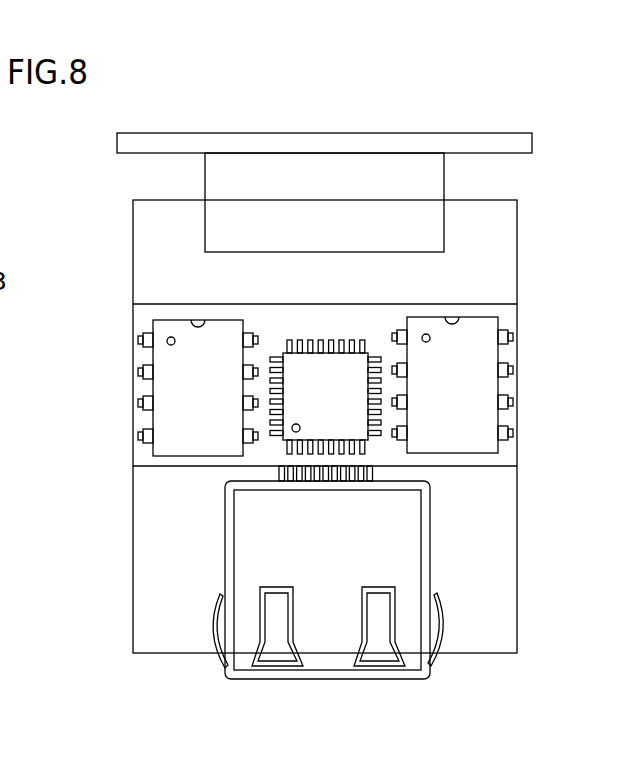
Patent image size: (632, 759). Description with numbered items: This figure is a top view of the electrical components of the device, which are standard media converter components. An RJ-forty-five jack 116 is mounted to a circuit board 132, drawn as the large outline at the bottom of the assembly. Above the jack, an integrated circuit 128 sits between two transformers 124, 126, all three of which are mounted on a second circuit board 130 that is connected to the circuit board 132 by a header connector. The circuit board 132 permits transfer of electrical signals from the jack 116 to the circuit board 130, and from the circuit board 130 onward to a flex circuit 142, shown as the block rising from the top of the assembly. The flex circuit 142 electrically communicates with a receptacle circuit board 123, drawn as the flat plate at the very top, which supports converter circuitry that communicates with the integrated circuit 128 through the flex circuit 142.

The RJ-45 jack 116 is at (323, 637).
The receptacle circuit board 123 is at (292, 142).
The transformer 124 is at (178, 405).
The transformer 126 is at (480, 412).
The integrated circuit 128 is at (316, 360).
The circuit board 130 is at (510, 314).
The circuit board 132 is at (508, 245).
The flex circuit 142 is at (437, 178).